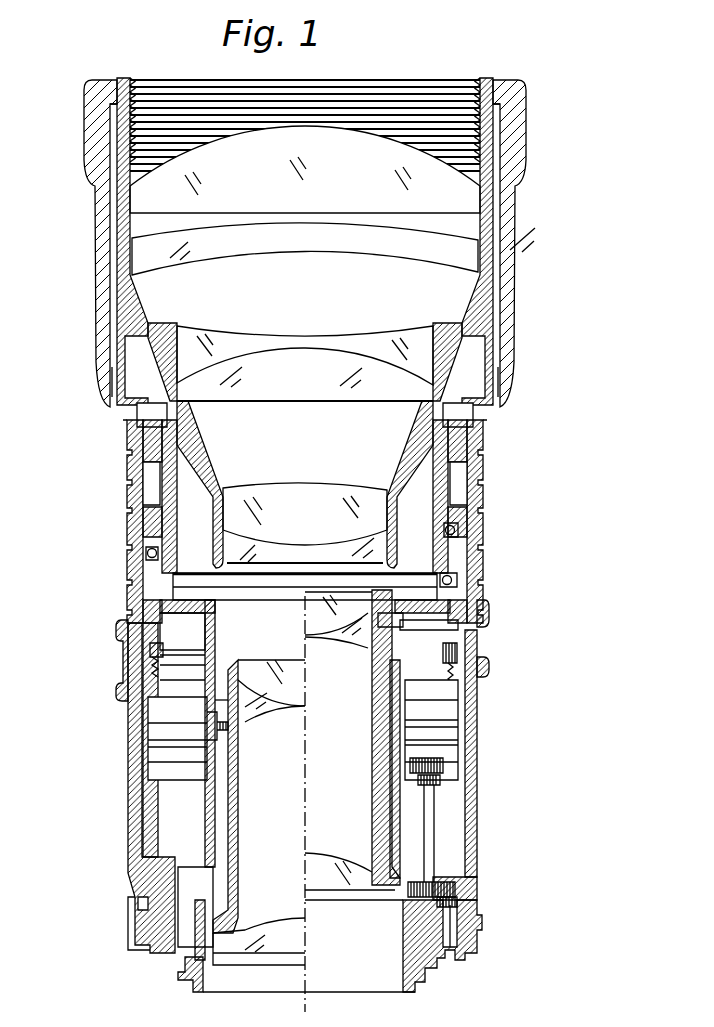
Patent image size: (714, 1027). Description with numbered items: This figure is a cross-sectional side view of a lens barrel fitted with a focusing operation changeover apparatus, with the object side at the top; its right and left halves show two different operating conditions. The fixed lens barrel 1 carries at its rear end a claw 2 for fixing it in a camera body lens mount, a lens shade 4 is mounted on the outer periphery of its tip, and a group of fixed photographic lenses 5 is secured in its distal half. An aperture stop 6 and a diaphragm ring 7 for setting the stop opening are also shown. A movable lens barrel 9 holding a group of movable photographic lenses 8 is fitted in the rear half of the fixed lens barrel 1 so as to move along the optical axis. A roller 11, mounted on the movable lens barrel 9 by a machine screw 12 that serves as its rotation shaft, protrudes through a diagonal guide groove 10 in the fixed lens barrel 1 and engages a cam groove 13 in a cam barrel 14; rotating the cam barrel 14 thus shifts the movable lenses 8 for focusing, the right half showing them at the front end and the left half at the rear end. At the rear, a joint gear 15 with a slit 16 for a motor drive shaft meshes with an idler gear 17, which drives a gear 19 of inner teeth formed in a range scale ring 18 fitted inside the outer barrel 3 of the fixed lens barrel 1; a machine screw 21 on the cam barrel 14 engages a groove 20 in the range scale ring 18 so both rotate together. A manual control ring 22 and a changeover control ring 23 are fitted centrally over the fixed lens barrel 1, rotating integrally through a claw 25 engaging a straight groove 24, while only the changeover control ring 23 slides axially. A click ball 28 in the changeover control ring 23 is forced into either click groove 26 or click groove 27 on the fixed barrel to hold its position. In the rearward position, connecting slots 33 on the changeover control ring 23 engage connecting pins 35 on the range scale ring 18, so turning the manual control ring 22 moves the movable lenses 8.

The fixed lens barrel 1 is at (492, 304).
The claw 2 is at (425, 975).
The fixed outer barrel 3 is at (478, 790).
The front knurled ring 4 is at (512, 175).
The group of fixed photographic lenses 5 is at (188, 348).
The aperture stop 6 is at (442, 588).
The diaphragm ring 7 is at (480, 912).
The group of movable photographic lenses 8 is at (243, 930).
The movable lens barrel 9 is at (398, 846).
The guide groove 10 is at (160, 770).
The roller 11 is at (200, 692).
The machine screw 12 is at (205, 727).
The cam groove 13 is at (205, 745).
The cam barrel 14 is at (460, 710).
The joint gear 15 is at (455, 935).
The slit 16 is at (443, 960).
The idler gear 17 is at (452, 880).
The range scale ring 18 is at (450, 790).
The gear having inner teeth 19 is at (432, 815).
The groove 20 is at (455, 805).
The machine screw 21 is at (445, 740).
The manual control ring 22 is at (484, 432).
The changeover control ring 23 is at (470, 680).
The straight groove 24 is at (140, 537).
The claw 25 is at (142, 563).
The click groove 26 is at (132, 496).
The click groove 27 is at (452, 560).
The click ball 28 is at (470, 545).
The connecting slot 33 is at (450, 628).
The connecting pin 35 is at (457, 668).